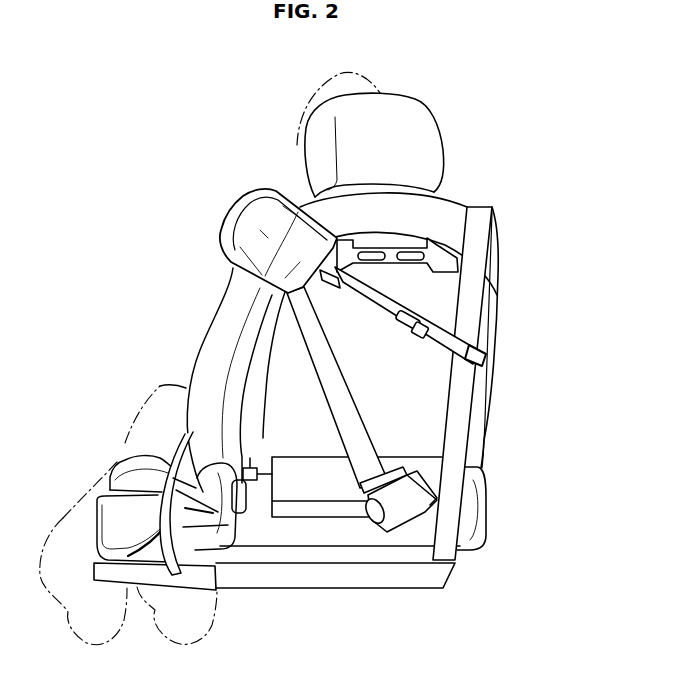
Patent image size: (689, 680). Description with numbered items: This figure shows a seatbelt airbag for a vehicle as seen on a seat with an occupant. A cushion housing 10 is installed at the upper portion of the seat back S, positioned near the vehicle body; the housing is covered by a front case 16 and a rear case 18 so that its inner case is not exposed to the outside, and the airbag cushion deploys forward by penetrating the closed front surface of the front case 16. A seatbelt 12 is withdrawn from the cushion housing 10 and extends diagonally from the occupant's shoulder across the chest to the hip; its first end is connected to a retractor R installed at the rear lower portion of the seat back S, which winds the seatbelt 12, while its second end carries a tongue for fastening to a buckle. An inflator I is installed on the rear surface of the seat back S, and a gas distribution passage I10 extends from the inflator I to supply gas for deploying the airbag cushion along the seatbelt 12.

The cushion housing 10 is at (202, 224).
The front case 16 is at (248, 207).
The rear case 18 is at (258, 231).
The gas distribution passage I10 is at (375, 298).
The seatbelt 12 is at (318, 353).
The seat back S is at (440, 266).
The inflator I is at (467, 352).
The retractor R is at (403, 508).